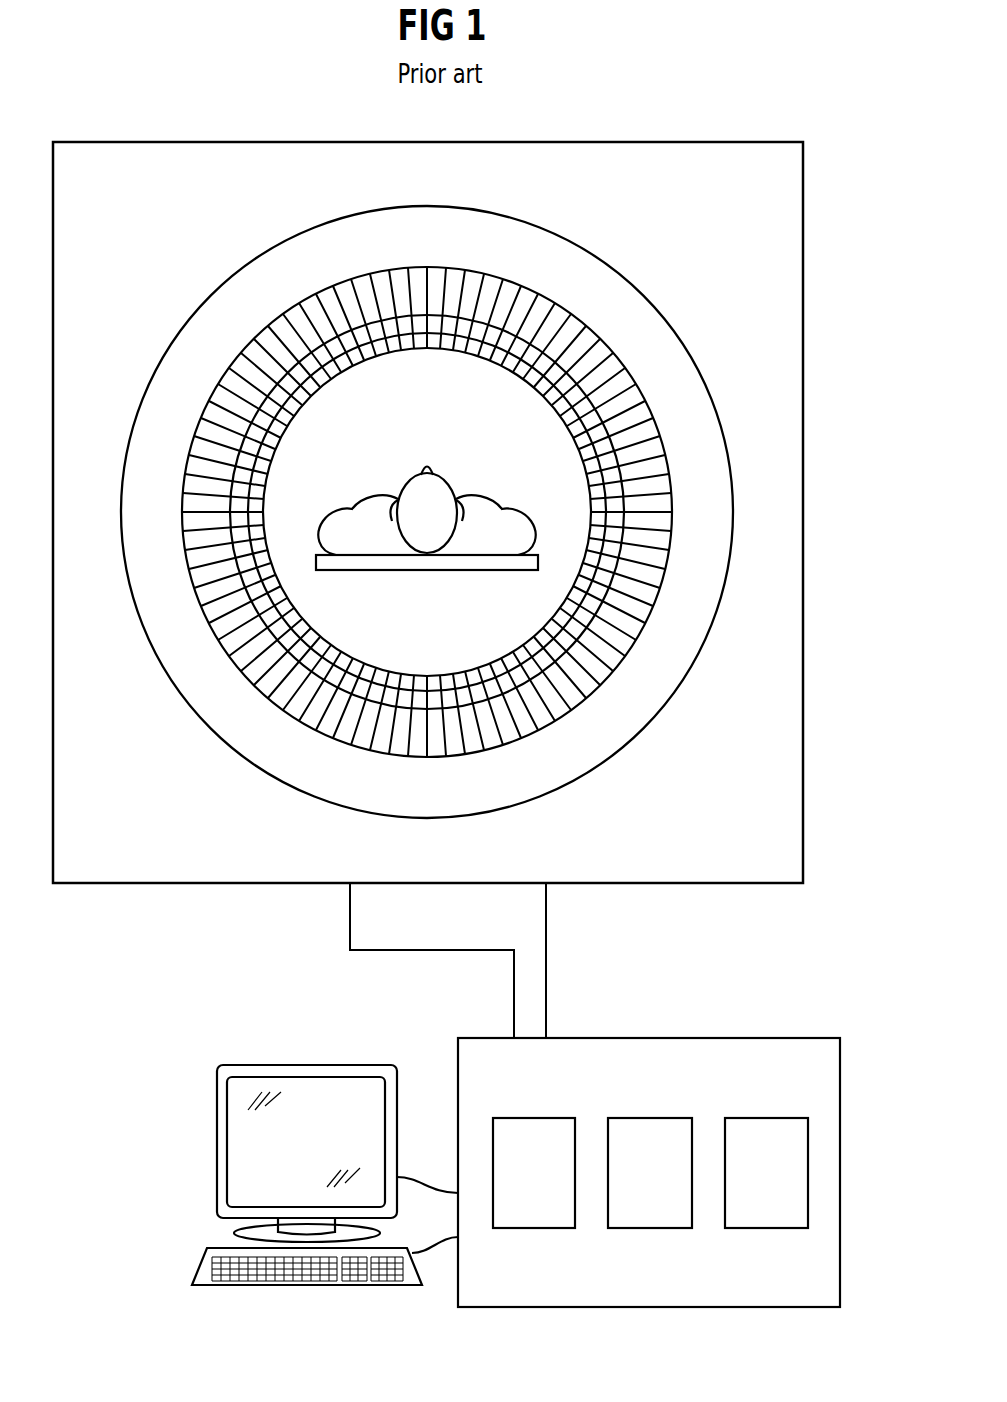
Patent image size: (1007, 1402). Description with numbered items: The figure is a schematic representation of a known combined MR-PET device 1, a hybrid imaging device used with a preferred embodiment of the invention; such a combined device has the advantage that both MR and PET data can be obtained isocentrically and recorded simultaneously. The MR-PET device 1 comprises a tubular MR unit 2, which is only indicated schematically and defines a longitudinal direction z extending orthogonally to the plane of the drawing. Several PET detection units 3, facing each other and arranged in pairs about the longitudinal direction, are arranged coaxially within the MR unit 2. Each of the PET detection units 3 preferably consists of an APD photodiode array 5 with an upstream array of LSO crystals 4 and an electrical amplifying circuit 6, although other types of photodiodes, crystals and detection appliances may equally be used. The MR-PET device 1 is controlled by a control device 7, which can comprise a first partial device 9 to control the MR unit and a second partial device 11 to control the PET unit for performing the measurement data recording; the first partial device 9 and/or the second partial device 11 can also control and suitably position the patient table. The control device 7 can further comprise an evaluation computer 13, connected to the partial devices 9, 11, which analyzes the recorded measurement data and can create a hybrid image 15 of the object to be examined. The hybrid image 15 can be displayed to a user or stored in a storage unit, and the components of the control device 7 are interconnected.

The combined MR-PET device 1 is at (705, 142).
The tubular MR unit 2 is at (735, 511).
The PET detection units 3 is at (423, 658).
The array of LSO crystals 4 is at (595, 505).
The APD photodiode array 5 is at (431, 327).
The electrical amplifying circuit 6 is at (312, 307).
The control device 7 is at (677, 1036).
The first partial device 9 is at (542, 1186).
The second partial device 11 is at (636, 1186).
The evaluation computer 13 is at (752, 1186).
The hybrid image 15 is at (217, 1143).